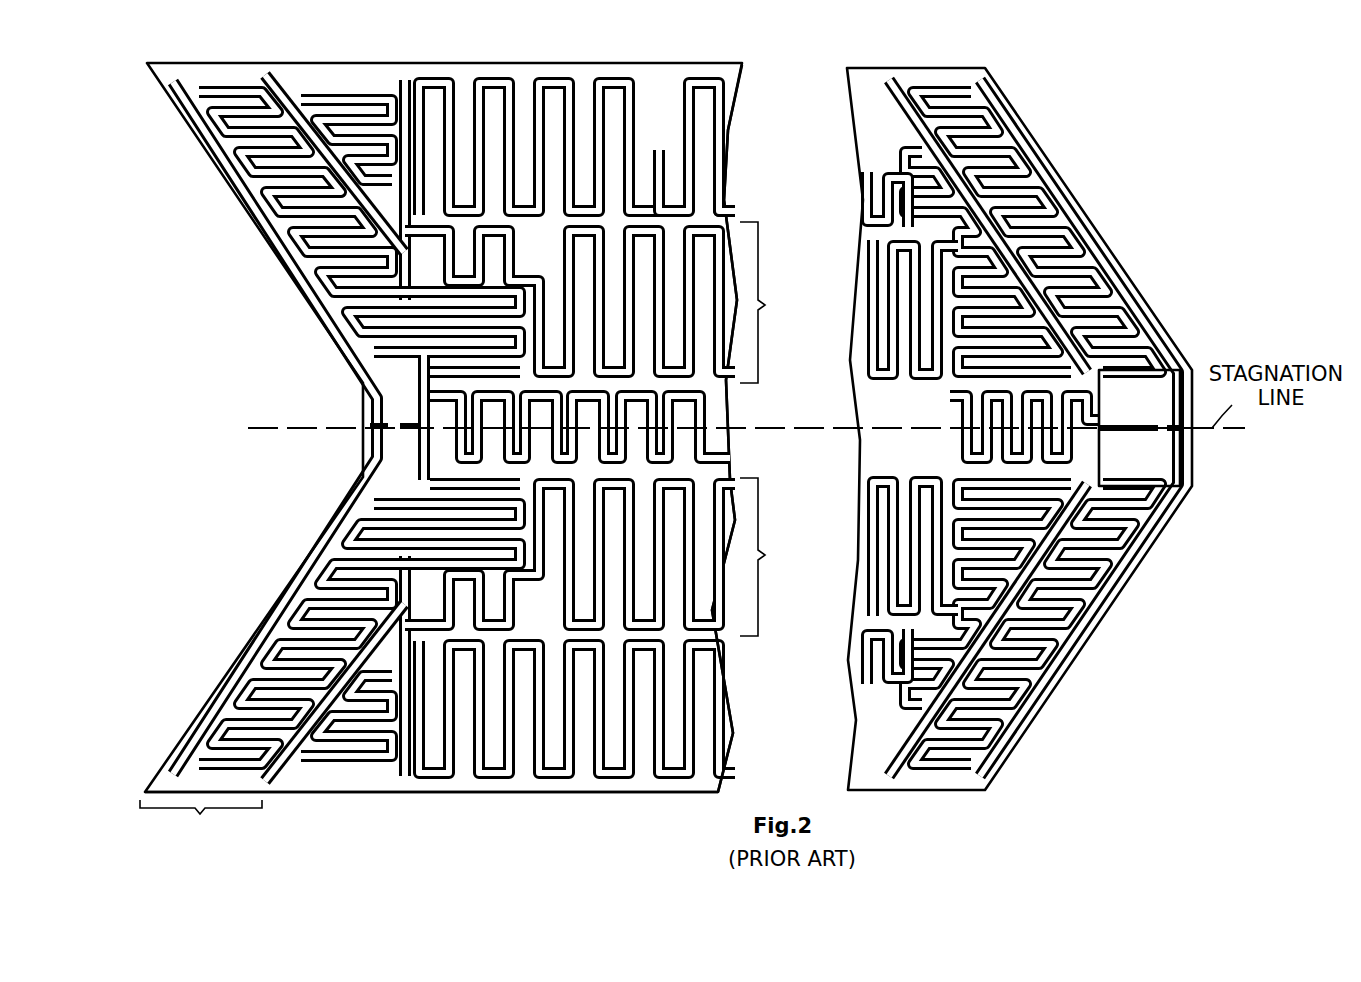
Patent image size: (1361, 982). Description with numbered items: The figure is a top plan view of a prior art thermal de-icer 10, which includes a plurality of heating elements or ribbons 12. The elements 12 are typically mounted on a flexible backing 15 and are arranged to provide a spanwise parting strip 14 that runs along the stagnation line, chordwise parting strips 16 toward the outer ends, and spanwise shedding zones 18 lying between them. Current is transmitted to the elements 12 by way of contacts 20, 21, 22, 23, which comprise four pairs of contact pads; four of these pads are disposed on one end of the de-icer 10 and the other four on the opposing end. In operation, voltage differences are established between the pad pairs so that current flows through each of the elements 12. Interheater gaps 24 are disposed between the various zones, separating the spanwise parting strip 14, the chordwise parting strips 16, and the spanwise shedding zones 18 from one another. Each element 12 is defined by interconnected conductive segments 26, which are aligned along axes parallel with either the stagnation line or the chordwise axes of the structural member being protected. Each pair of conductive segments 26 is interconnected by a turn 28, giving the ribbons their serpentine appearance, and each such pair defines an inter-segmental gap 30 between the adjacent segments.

The thermal de-icer 10 is at (508, 49).
The elements or ribbons 12 is at (746, 66).
The spanwise parting strip 14 is at (761, 438).
The flexible backing 15 is at (566, 795).
The chordwise parting strips 16 is at (330, 675).
The spanwise shedding zones 18 is at (606, 429).
The contact 20 is at (390, 241).
The contact 21 is at (380, 399).
The contact 22 is at (380, 452).
The contact 23 is at (380, 649).
The interheater gaps 24 is at (267, 74).
The conductive segments 26 is at (542, 110).
The turn 28 is at (597, 82).
The inter-segmental gap 30 is at (674, 100).